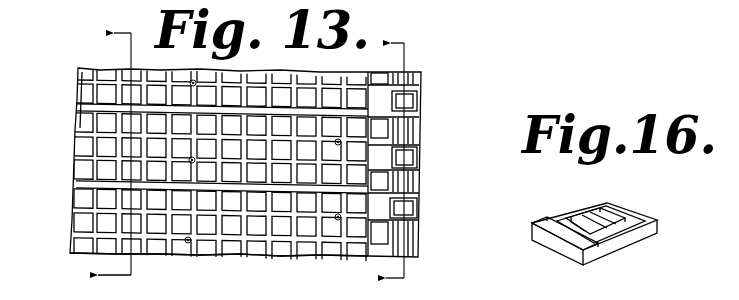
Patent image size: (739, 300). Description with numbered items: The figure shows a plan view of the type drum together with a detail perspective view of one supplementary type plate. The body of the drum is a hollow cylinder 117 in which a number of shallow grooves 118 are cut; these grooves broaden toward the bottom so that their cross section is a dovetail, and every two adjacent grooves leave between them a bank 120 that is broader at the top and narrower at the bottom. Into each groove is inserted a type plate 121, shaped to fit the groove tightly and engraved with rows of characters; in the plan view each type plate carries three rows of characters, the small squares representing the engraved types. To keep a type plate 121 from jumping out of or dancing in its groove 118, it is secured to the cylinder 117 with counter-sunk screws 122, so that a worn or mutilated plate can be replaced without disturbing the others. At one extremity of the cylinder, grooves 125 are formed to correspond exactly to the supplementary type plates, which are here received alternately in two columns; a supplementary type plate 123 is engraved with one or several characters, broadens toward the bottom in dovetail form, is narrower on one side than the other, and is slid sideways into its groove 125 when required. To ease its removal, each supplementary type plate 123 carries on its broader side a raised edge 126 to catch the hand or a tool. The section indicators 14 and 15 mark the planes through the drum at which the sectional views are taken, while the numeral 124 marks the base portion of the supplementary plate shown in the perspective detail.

In FIG. 13, the section line 14 is at (114, 153).
In FIG. 13, the section line 15 is at (393, 160).
In FIG. 13, the hollow cylinder 117 is at (77, 227).
In FIG. 13, the grooves 118 is at (76, 162).
In FIG. 13, the bank 120 is at (77, 104).
In FIG. 13, the type plate 121 is at (87, 145).
In FIG. 13, the counter-sunk screws 122 is at (263, 161).
In FIG. 13, the supplementary type plate 123 is at (418, 103).
In FIG. 16, the supplementary type plate 123 is at (562, 224).
In FIG. 13, the key base 124 is at (417, 207).
In FIG. 16, the key base 124 is at (623, 237).
In FIG. 13, the grooves 125 is at (419, 150).
In FIG. 13, the raised edge 126 is at (419, 112).
In FIG. 16, the raised edge 126 is at (565, 232).